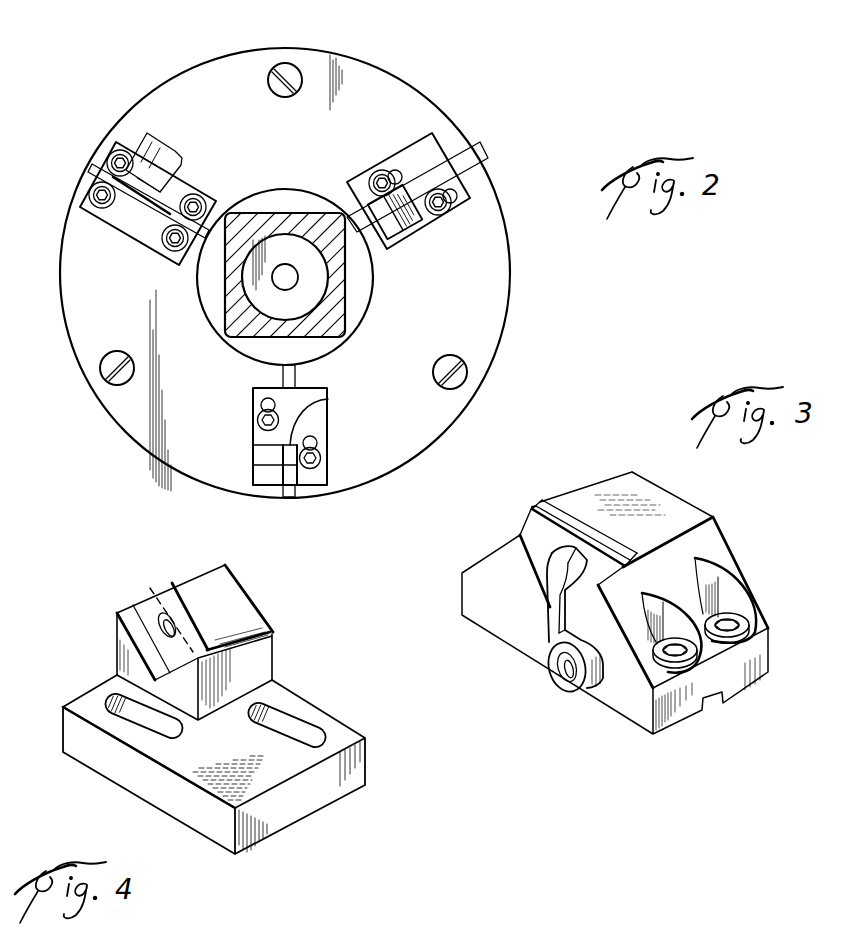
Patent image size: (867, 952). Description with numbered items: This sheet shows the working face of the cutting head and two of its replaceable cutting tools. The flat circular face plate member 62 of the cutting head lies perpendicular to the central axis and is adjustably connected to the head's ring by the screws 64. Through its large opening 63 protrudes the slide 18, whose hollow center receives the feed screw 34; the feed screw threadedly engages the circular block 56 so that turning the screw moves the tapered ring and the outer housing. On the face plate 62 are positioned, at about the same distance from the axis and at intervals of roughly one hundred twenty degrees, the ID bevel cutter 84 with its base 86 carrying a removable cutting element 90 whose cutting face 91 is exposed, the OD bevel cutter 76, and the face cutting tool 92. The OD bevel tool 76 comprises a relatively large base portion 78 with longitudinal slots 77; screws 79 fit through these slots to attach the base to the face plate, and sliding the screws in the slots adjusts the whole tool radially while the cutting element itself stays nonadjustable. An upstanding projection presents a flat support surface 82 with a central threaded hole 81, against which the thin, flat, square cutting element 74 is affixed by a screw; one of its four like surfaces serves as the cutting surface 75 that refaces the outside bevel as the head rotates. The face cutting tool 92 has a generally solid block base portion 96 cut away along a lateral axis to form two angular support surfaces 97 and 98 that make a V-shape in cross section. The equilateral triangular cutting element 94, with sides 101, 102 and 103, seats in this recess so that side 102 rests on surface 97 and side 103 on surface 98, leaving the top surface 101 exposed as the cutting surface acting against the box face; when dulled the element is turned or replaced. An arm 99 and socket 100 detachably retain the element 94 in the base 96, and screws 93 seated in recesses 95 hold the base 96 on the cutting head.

In FIG. 2, the slide 18 is at (335, 292).
In FIG. 2, the feed screw 34 is at (282, 265).
In FIG. 2, the circular block 56 is at (266, 235).
In FIG. 2, the face plate member 62 is at (380, 85).
In FIG. 2, the large opening 63 is at (258, 202).
In FIG. 2, the screws 64 is at (285, 62).
In FIG. 2, the cutting element 74 is at (280, 457).
In FIG. 4, the cutting element 74 is at (147, 585).
In FIG. 2, the cutting surface 75 is at (330, 402).
In FIG. 2, the OD bevel cutter 76 is at (332, 428).
In FIG. 4, the OD bevel cutter 76 is at (265, 610).
In FIG. 2, the longitudinal slots 77 is at (258, 405).
In FIG. 4, the longitudinal slots 77 is at (115, 700).
In FIG. 2, the base portion 78 is at (303, 388).
In FIG. 4, the base portion 78 is at (283, 695).
In FIG. 2, the screws 79 is at (322, 455).
In FIG. 4, the threaded hole 81 is at (160, 628).
In FIG. 4, the support surface 82 is at (148, 603).
In FIG. 2, the ID bevel cutter 84 is at (397, 148).
In FIG. 2, the base 86 is at (455, 212).
In FIG. 2, the cutting element 90 is at (363, 203).
In FIG. 2, the cutting face 91 is at (398, 196).
In FIG. 2, the face cutting tool 92 is at (195, 180).
In FIG. 3, the face cutting tool 92 is at (700, 495).
In FIG. 3, the screws 93 is at (748, 615).
In FIG. 2, the triangular shaped cutting element 94 is at (150, 214).
In FIG. 3, the triangular shaped cutting element 94 is at (532, 500).
In FIG. 3, the recesses 95 is at (732, 603).
In FIG. 3, the block base portion 96 is at (500, 627).
In FIG. 3, the angular support surface 97 is at (608, 487).
In FIG. 3, the angular support surface 98 is at (697, 518).
In FIG. 3, the arm 99 is at (552, 590).
In FIG. 3, the socket 100 is at (600, 695).
In FIG. 3, the top surface 101 is at (590, 530).
In FIG. 3, the side 102 is at (530, 510).
In FIG. 3, the side 103 is at (630, 565).